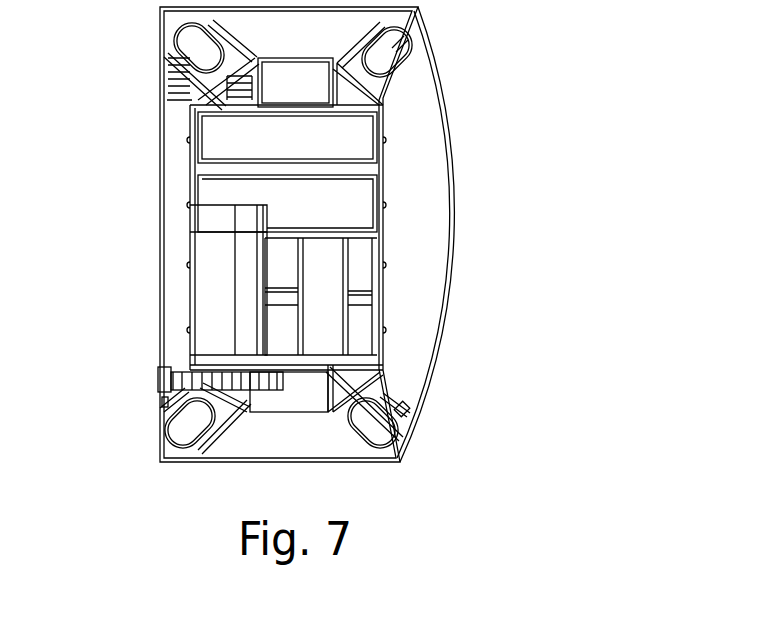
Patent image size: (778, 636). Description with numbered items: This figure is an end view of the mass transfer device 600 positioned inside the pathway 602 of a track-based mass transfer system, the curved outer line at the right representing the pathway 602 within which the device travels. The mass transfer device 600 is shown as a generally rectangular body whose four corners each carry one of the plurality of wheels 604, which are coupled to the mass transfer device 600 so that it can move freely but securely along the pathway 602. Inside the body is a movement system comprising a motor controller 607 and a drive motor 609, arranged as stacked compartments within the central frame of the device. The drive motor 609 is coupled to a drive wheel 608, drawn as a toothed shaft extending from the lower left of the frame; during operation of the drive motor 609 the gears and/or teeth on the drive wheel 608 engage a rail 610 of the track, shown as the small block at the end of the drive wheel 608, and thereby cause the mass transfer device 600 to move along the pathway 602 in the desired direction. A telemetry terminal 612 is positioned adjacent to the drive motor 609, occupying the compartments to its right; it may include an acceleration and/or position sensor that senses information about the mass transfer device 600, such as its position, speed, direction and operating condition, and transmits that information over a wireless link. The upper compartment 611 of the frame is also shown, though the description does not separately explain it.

The mass transfer device 600 is at (200, 172).
The pathway 602 is at (455, 210).
The wheels 604 is at (380, 412).
The motor controller 607 is at (212, 218).
The drive wheel 608 is at (157, 380).
The drive motor 609 is at (202, 290).
The rail 610 is at (160, 370).
The upper housing compartment 611 is at (356, 144).
The telemetry terminal 612 is at (349, 270).